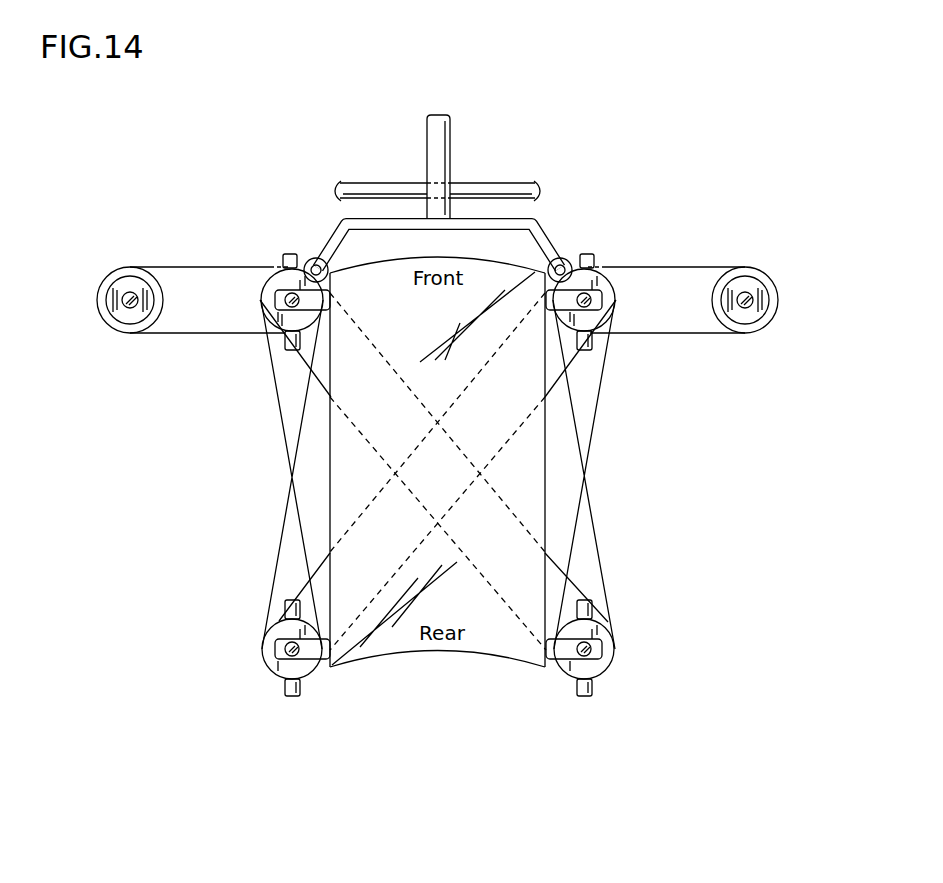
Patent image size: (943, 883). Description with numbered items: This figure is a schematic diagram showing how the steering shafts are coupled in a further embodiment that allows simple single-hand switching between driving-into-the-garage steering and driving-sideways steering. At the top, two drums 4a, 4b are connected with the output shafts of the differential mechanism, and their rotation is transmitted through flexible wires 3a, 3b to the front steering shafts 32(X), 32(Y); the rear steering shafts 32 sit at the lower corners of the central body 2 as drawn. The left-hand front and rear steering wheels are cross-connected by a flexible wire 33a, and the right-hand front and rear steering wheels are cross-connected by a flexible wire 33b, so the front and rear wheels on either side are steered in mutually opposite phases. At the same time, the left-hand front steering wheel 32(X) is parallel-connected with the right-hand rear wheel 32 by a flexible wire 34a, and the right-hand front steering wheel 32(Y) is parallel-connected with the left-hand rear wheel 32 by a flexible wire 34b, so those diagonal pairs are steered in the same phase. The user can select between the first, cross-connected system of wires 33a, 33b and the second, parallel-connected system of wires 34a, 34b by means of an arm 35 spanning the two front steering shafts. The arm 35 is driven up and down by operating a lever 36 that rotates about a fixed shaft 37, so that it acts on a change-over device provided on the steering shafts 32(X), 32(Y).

The support pin 2 is at (285, 340).
The flexible wire 3a is at (222, 267).
The flexible wire 3b is at (662, 267).
The drum 4a is at (134, 282).
The drum 4b is at (747, 283).
The steering shaft 32 is at (267, 282).
The flexible wire 33a is at (280, 408).
The flexible wire 33b is at (593, 518).
The flexible wire 34a is at (505, 605).
The flexible wire 34b is at (372, 605).
The arm 35 is at (505, 224).
The lever 36 is at (442, 142).
The fixed shaft 37 is at (477, 190).